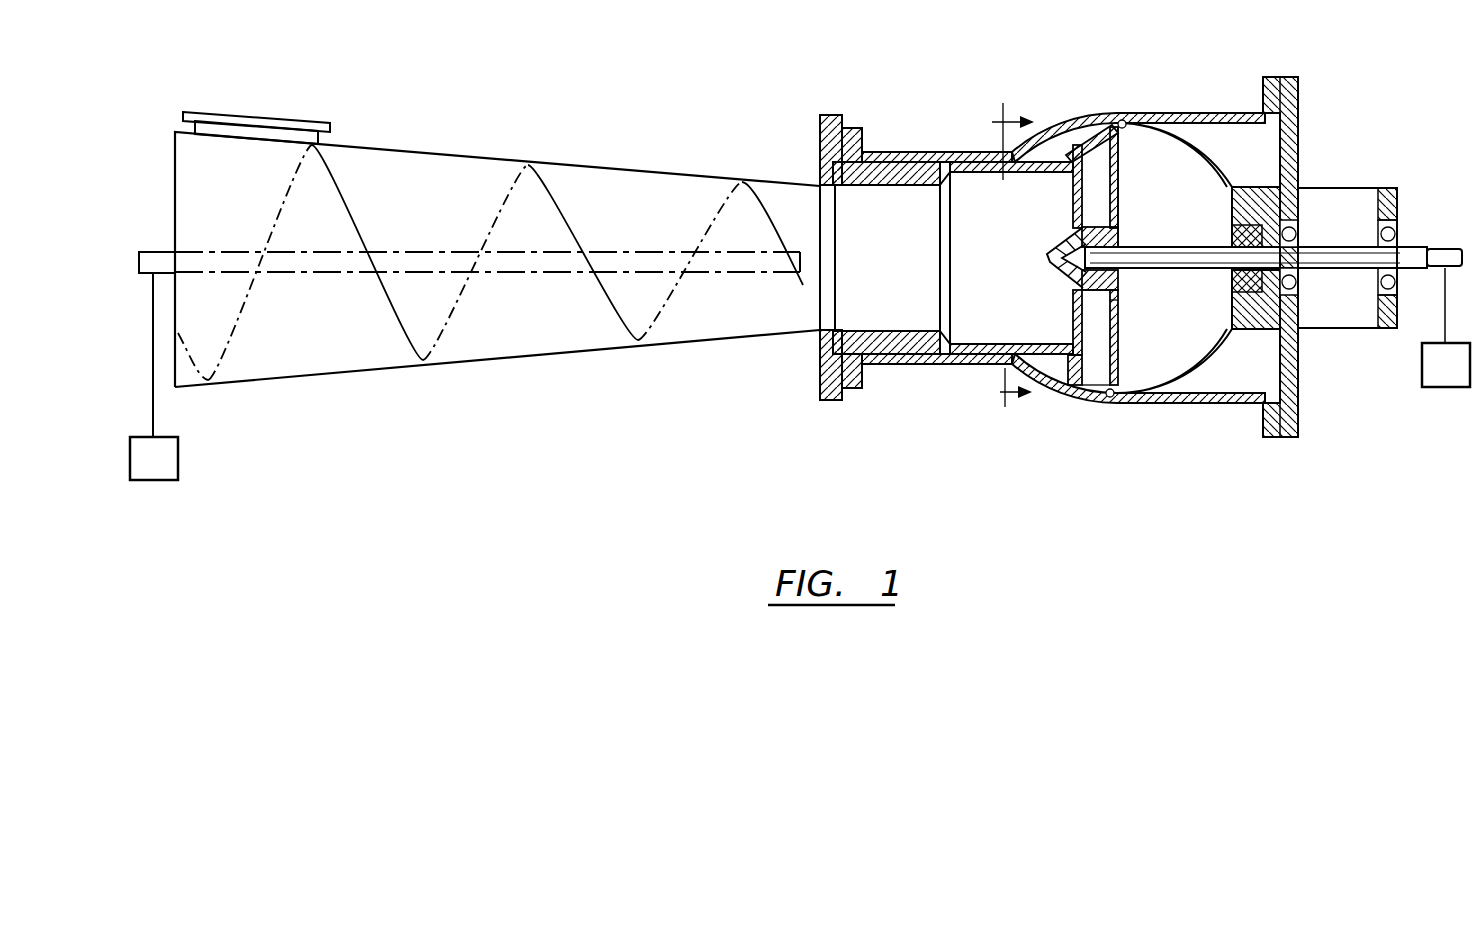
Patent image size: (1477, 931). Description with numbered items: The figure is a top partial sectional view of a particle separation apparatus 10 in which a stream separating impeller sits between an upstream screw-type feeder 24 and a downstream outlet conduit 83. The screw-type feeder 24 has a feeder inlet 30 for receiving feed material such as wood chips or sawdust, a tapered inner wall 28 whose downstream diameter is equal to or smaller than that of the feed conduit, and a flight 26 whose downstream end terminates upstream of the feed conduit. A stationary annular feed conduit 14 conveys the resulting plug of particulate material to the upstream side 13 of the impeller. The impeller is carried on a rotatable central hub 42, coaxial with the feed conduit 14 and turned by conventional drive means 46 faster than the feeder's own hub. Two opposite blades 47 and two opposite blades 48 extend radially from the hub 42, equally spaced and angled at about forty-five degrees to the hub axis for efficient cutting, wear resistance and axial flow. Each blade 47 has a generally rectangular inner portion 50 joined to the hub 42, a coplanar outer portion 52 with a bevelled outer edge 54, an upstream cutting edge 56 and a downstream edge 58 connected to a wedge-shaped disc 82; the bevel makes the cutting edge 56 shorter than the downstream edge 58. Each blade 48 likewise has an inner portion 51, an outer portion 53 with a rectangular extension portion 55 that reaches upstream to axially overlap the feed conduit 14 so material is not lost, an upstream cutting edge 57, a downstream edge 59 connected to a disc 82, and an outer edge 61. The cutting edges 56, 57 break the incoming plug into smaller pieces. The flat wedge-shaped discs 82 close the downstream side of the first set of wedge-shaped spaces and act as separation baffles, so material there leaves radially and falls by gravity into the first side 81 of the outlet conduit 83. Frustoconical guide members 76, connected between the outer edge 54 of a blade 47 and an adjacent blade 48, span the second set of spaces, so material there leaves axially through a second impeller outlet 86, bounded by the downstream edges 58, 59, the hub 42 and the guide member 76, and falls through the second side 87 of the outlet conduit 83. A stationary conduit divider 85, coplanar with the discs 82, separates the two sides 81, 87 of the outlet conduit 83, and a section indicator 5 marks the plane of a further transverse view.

The particle separation apparatus 10 is at (757, 94).
The upstream side 13 is at (1073, 181).
The annular feed conduit 14 is at (962, 176).
The screw-type feeder 24 is at (470, 152).
The flight 26 is at (388, 313).
The tapered inner wall 28 is at (528, 352).
The feeder inlet 30 is at (293, 113).
The central hub 42 is at (1055, 250).
The drive means 46 is at (1434, 378).
The blades 47 is at (1122, 197).
The blades 48 is at (1123, 318).
The inner portion 50 is at (1095, 222).
The inner portion 51 is at (1090, 298).
The outer portion 52 is at (1122, 160).
The outer portion 53 is at (1086, 378).
The bevelled outer edge 54 is at (1098, 148).
The rectangular extension portion 55 is at (1068, 365).
The upstream cutting edge 56 is at (1075, 207).
The upstream cutting edge 57 is at (1097, 320).
The downstream edge 58 is at (1093, 180).
The downstream edge 59 is at (1122, 340).
The outer edge 61 is at (1098, 388).
The frustoconical guide member 76 is at (1088, 128).
The first side 81 is at (1043, 362).
The wedge-shaped disc 82 is at (1115, 303).
The outlet conduit 83 is at (1207, 166).
The conduit divider 85 is at (1124, 124).
The second impeller outlet 86 is at (1122, 206).
The second side 87 is at (1207, 343).
The section line 5 is at (1014, 256).